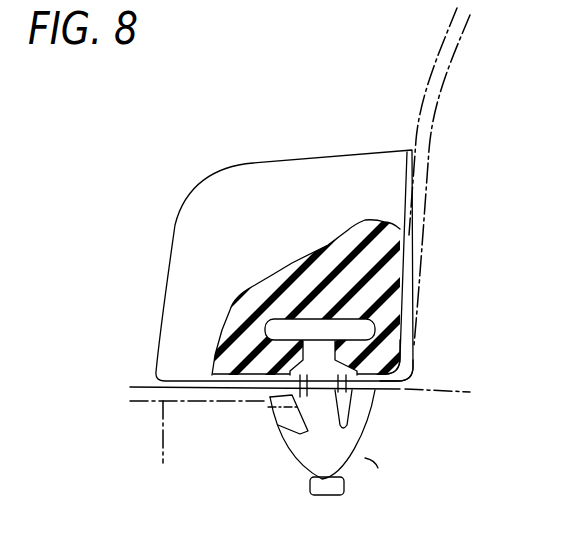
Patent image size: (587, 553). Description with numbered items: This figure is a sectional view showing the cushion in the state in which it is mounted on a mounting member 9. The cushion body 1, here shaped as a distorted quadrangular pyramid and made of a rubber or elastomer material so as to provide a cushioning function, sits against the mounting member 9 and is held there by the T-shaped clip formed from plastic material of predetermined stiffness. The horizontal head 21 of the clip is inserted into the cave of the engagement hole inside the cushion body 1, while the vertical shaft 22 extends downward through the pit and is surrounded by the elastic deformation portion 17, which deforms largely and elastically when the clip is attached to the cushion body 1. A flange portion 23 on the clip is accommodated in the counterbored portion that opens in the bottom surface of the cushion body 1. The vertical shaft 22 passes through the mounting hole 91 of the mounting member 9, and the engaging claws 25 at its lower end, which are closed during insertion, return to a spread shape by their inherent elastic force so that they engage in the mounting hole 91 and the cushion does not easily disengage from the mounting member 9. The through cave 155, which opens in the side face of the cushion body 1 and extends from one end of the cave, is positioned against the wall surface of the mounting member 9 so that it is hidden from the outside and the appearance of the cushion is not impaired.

The cushion body 1 is at (170, 176).
The mounting member 9 is at (430, 220).
The elastic deformation portion 17 is at (403, 366).
The horizontal head 21 is at (378, 319).
The vertical shaft 22 is at (298, 408).
The flange portion 23 is at (393, 382).
The engaging claws 25 is at (355, 425).
The mounting hole 91 is at (323, 413).
The through cave 155 is at (372, 332).